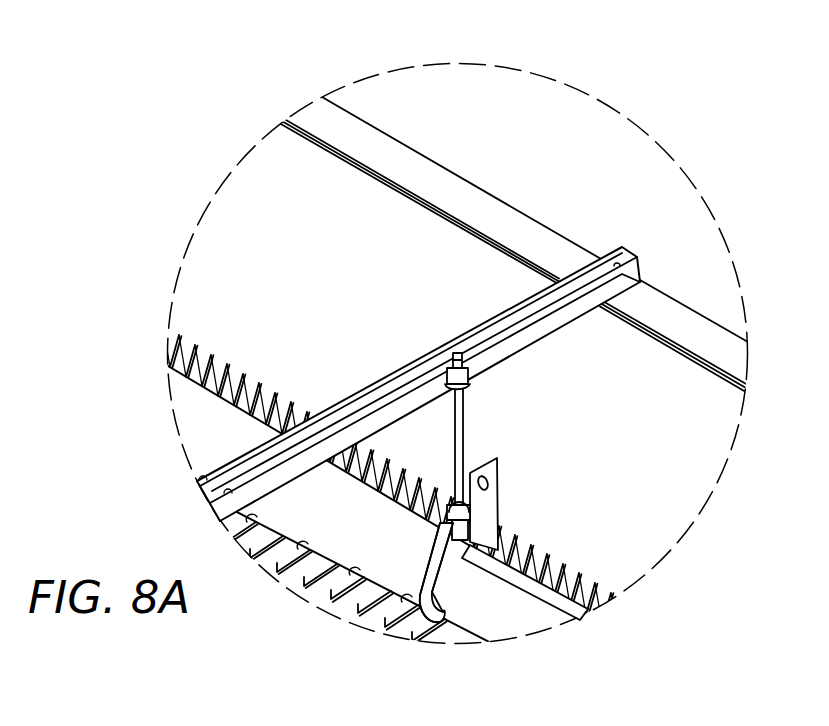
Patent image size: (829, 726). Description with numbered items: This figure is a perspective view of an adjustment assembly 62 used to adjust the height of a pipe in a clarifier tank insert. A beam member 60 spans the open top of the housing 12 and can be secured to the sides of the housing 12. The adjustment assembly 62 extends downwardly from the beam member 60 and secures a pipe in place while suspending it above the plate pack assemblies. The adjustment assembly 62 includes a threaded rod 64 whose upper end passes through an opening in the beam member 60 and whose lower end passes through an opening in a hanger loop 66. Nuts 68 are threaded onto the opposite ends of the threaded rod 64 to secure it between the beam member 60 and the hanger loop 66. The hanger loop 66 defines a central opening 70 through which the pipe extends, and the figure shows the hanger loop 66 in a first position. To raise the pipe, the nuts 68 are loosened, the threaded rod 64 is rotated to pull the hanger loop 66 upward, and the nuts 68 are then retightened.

The housing 12 is at (432, 172).
The beam member 60 is at (614, 247).
The adjustment assembly 62 is at (539, 489).
The threaded rod 64 is at (462, 409).
The hanger loop 66 is at (505, 518).
The nuts 68 is at (455, 372).
The central opening 70 is at (437, 577).